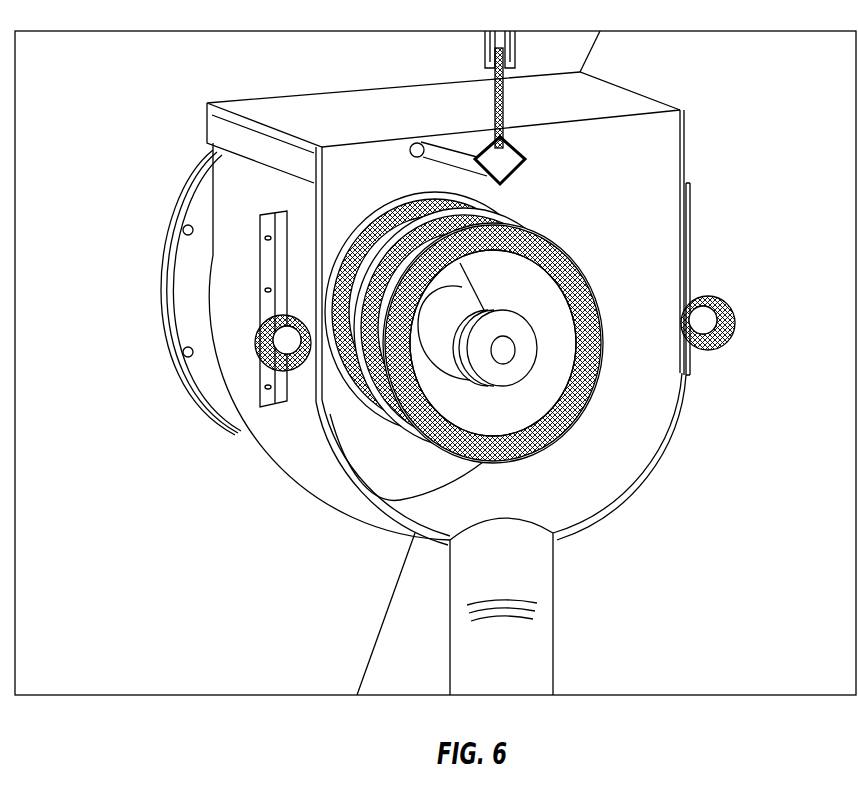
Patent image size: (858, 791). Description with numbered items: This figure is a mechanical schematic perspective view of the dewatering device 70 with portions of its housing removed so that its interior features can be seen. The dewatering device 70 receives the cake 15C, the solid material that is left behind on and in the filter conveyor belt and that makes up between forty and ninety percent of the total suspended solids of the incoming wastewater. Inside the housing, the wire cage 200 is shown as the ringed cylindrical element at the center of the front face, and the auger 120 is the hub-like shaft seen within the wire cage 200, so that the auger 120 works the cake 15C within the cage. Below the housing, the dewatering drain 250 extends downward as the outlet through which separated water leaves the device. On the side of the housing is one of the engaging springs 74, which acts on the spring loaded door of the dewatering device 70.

The cake 15C is at (506, 270).
The dewatering device 70 is at (663, 152).
The wire cage 200 is at (588, 298).
The auger 120 is at (522, 356).
The engaging spring 74 is at (736, 321).
The dewatering drain 250 is at (502, 557).